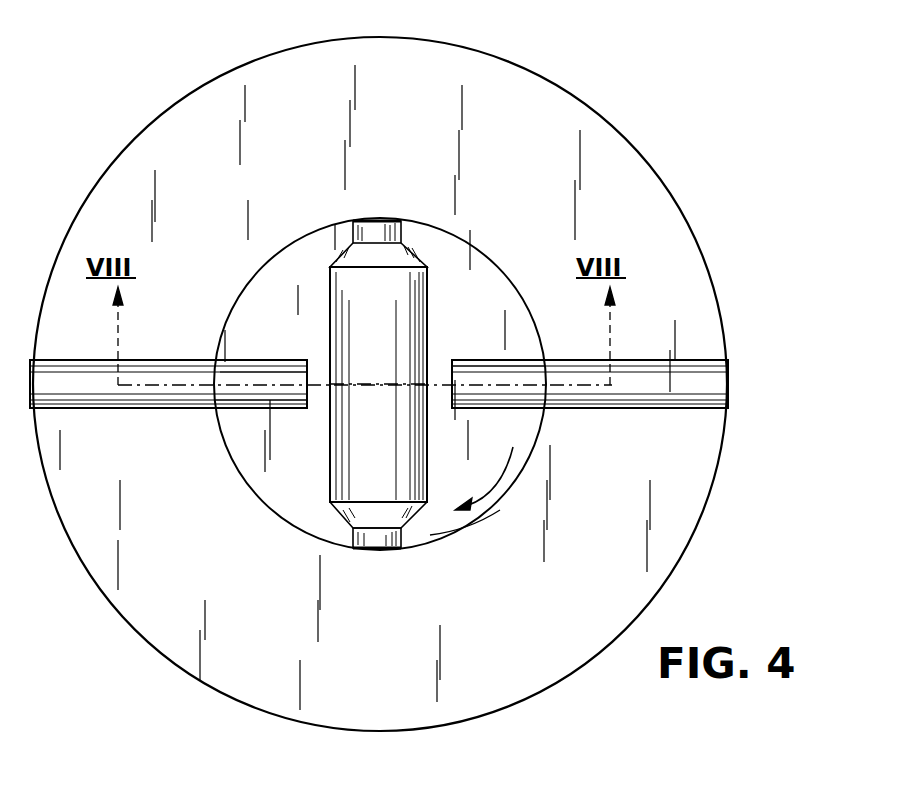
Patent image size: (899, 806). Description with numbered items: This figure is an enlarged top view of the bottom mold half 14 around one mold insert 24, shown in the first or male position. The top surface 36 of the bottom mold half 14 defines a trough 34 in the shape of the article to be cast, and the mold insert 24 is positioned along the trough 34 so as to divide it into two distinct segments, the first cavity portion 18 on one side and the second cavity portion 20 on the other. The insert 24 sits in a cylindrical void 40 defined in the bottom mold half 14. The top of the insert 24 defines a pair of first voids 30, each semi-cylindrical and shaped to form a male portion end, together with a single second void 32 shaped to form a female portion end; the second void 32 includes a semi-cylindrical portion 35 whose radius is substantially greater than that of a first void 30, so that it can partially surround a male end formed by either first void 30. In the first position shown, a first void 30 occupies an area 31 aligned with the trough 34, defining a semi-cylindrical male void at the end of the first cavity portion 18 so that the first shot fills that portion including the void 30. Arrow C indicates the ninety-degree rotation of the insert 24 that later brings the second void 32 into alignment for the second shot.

The bottom mold half 14 is at (577, 98).
The top surface 36 is at (433, 104).
The cylindrical void 40 is at (296, 246).
The mold insert 24 is at (467, 518).
The first cavity portion 18 is at (112, 409).
The second cavity portion 20 is at (660, 409).
The trough 34 is at (166, 360).
The area 31 is at (236, 372).
The first void 30 is at (262, 398).
The second void 32 is at (390, 296).
The semi-cylindrical portion 35 is at (352, 475).
The arrow C is at (500, 478).